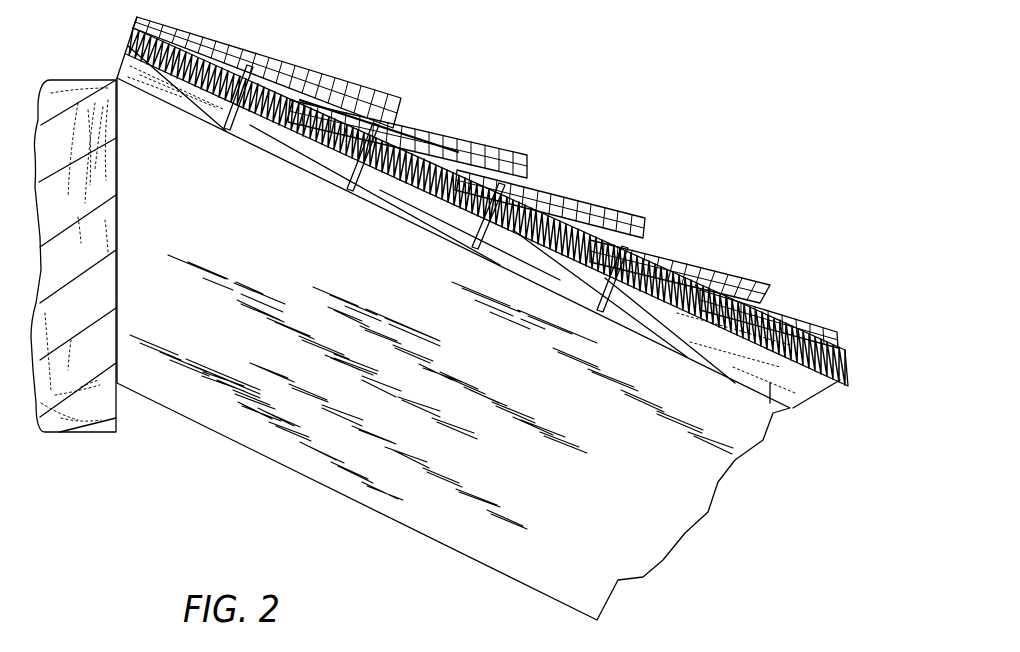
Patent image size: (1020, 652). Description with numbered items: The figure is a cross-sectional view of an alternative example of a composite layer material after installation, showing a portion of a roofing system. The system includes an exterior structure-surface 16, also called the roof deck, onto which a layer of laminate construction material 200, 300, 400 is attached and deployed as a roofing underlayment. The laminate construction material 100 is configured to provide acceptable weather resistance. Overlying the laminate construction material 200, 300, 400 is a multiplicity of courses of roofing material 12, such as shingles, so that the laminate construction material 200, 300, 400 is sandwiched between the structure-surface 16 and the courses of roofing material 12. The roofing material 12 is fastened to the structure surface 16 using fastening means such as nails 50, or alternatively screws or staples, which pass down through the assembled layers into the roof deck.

The roofing material 12 is at (342, 87).
The exterior structure-surface 16 is at (190, 400).
The nails 50 is at (357, 192).
The laminate construction material 100 is at (313, 162).
The laminate construction material 200 is at (537, 253).
The laminate construction material 300 is at (537, 253).
The laminate construction material 400 is at (845, 382).